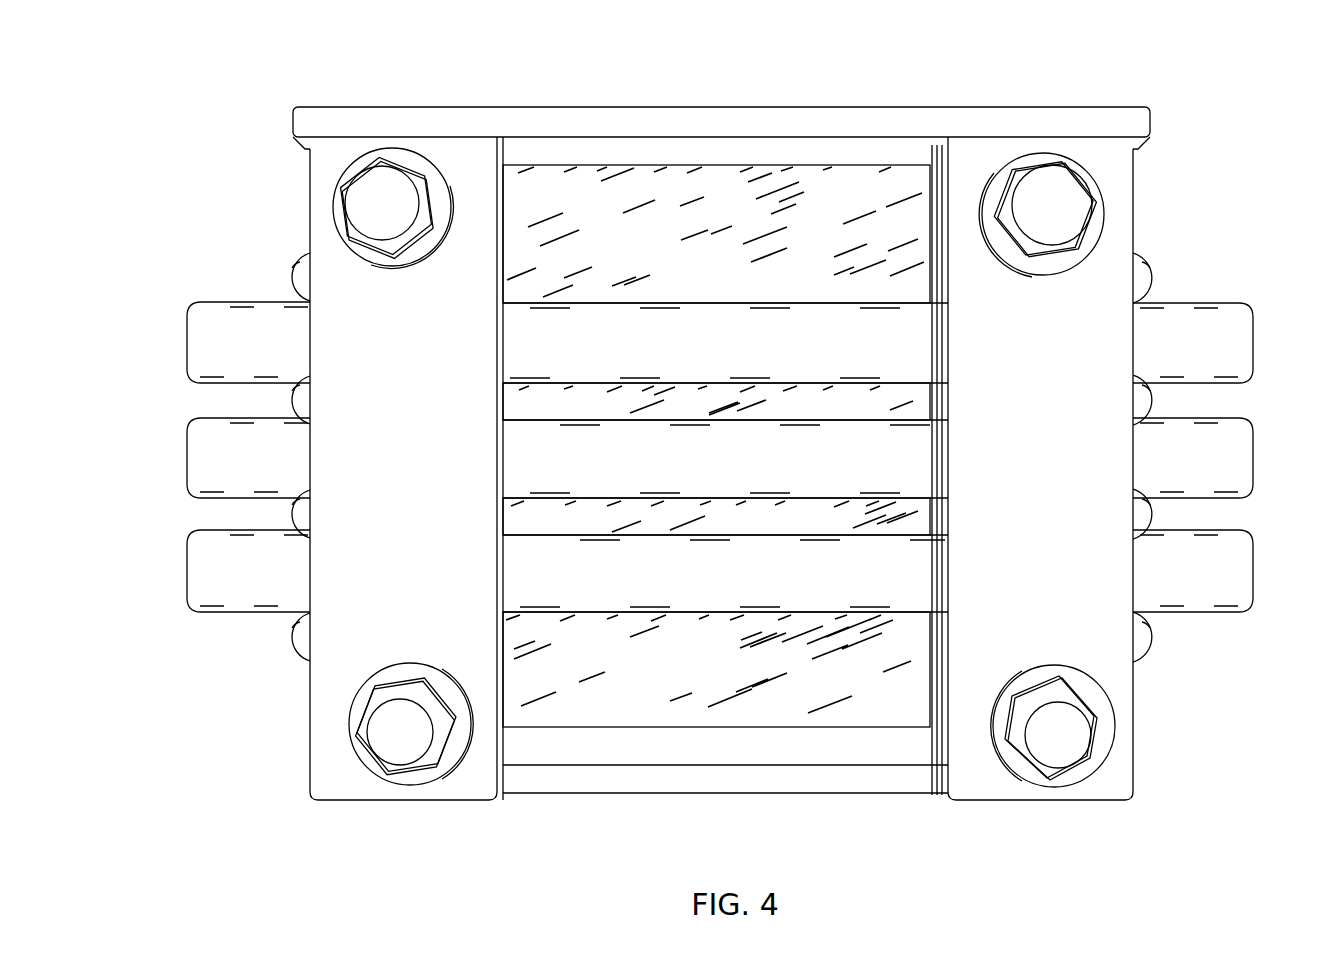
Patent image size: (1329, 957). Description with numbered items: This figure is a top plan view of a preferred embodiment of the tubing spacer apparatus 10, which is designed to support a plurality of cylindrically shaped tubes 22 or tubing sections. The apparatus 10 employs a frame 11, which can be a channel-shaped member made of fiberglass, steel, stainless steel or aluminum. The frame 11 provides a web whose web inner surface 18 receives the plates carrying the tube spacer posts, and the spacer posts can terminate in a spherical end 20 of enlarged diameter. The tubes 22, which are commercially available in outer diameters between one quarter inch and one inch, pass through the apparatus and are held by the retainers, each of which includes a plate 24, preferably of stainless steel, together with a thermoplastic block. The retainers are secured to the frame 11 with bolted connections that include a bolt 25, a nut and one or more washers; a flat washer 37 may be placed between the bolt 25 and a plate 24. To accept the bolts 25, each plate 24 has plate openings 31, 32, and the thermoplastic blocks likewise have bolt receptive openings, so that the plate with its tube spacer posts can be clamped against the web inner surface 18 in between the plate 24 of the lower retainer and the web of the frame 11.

The tubing spacer apparatus 10 is at (1020, 75).
The frame 11 is at (700, 122).
The web inner surface 18 is at (720, 232).
The spherical end 20 is at (1150, 278).
The tube 22 is at (745, 354).
The plate 24 is at (1110, 270).
The bolt 25 is at (385, 186).
The plate opening 31 is at (427, 253).
The plate opening 32 is at (410, 785).
The flat washer 37 is at (1102, 701).